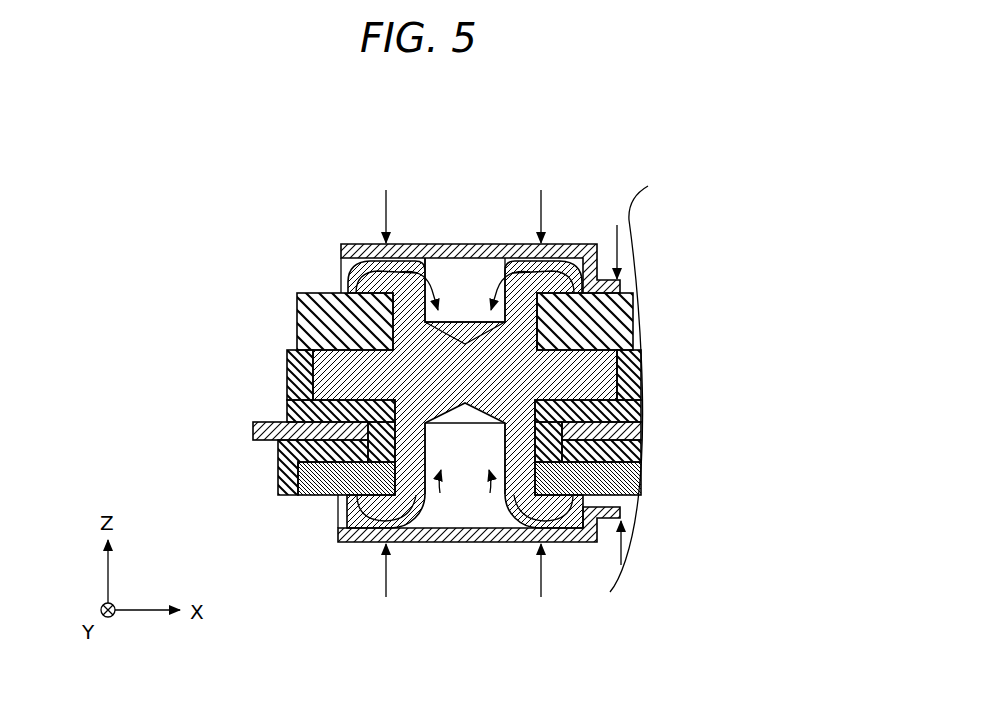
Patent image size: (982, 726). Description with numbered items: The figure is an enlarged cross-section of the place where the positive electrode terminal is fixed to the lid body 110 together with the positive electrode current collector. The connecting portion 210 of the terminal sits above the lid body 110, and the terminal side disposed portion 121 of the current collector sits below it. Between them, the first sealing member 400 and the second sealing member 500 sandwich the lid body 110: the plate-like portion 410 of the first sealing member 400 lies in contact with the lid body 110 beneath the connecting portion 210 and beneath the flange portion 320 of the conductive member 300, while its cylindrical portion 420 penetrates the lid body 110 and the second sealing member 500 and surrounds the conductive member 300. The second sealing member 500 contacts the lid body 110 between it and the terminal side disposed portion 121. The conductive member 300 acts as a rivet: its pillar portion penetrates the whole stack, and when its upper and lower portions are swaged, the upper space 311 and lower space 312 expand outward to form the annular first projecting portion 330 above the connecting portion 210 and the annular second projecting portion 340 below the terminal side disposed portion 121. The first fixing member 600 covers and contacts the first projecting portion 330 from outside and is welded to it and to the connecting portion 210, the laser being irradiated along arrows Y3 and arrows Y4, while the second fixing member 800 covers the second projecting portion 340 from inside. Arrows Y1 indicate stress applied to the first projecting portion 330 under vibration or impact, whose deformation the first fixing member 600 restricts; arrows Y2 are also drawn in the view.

The lid body 110 is at (643, 433).
The terminal side disposed portion 121 is at (620, 494).
The connecting portion 210 is at (612, 318).
The conductive member 300 is at (322, 265).
The upper space 311 is at (458, 262).
The lower space 312 is at (470, 512).
The flange portion 320 is at (353, 372).
The first projecting portion 330 is at (365, 275).
The second projecting portion 340 is at (345, 510).
The first sealing member 400 is at (637, 381).
The plate-like portion 410 is at (340, 413).
The cylindrical portion 420 is at (380, 443).
The second sealing member 500 is at (640, 453).
The first fixing member 600 is at (478, 244).
The second fixing member 800 is at (352, 543).
The arrows indicating stress direction Y1 is at (388, 262).
The second direction reference Y2 is at (606, 597).
The arrows indicating laser irradiation direction for cover portion Y3 is at (463, 395).
The arrows indicating laser irradiation direction for contact portions Y4 is at (603, 394).